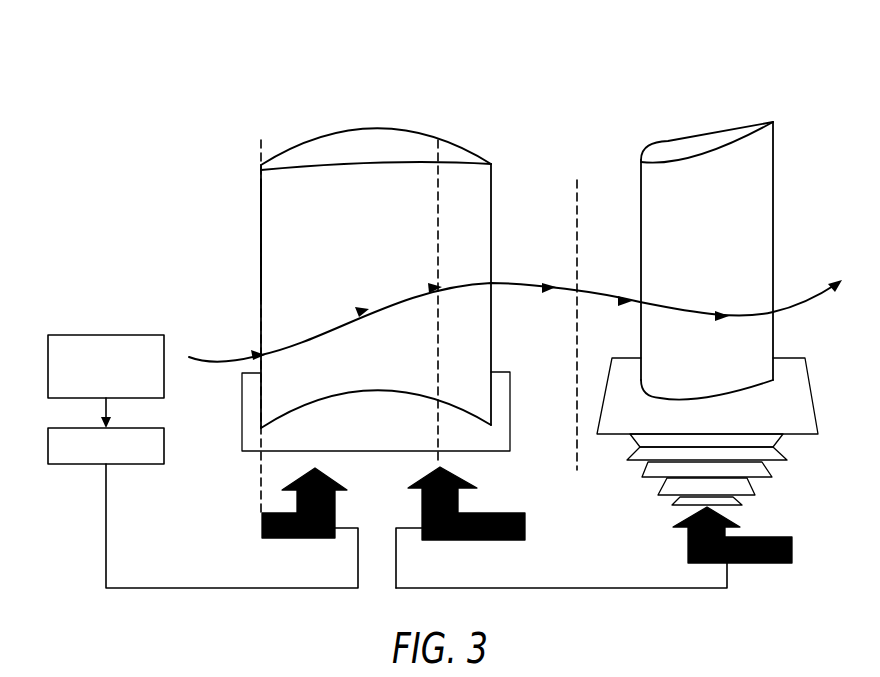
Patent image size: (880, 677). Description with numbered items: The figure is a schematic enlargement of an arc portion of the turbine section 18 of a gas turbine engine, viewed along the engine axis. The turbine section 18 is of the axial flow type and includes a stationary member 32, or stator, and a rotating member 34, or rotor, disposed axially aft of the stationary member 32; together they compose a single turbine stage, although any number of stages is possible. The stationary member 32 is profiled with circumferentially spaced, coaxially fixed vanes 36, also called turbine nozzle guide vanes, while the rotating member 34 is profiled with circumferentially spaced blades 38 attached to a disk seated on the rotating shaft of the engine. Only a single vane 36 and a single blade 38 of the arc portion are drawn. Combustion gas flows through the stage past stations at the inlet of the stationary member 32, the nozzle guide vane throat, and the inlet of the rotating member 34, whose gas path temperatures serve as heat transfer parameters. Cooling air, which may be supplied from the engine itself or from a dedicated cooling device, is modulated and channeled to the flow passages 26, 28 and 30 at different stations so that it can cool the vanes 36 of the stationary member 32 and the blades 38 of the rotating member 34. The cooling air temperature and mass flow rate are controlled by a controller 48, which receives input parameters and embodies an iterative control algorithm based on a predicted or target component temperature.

The turbine section 18 is at (569, 74).
The flow passage 26 is at (262, 530).
The flow passage 28 is at (505, 513).
The flow passage 30 is at (780, 537).
The stationary member 32 is at (380, 106).
The rotating member 34 is at (703, 118).
The vane 36 is at (277, 211).
The blade 38 is at (755, 185).
The controller 48 is at (62, 466).